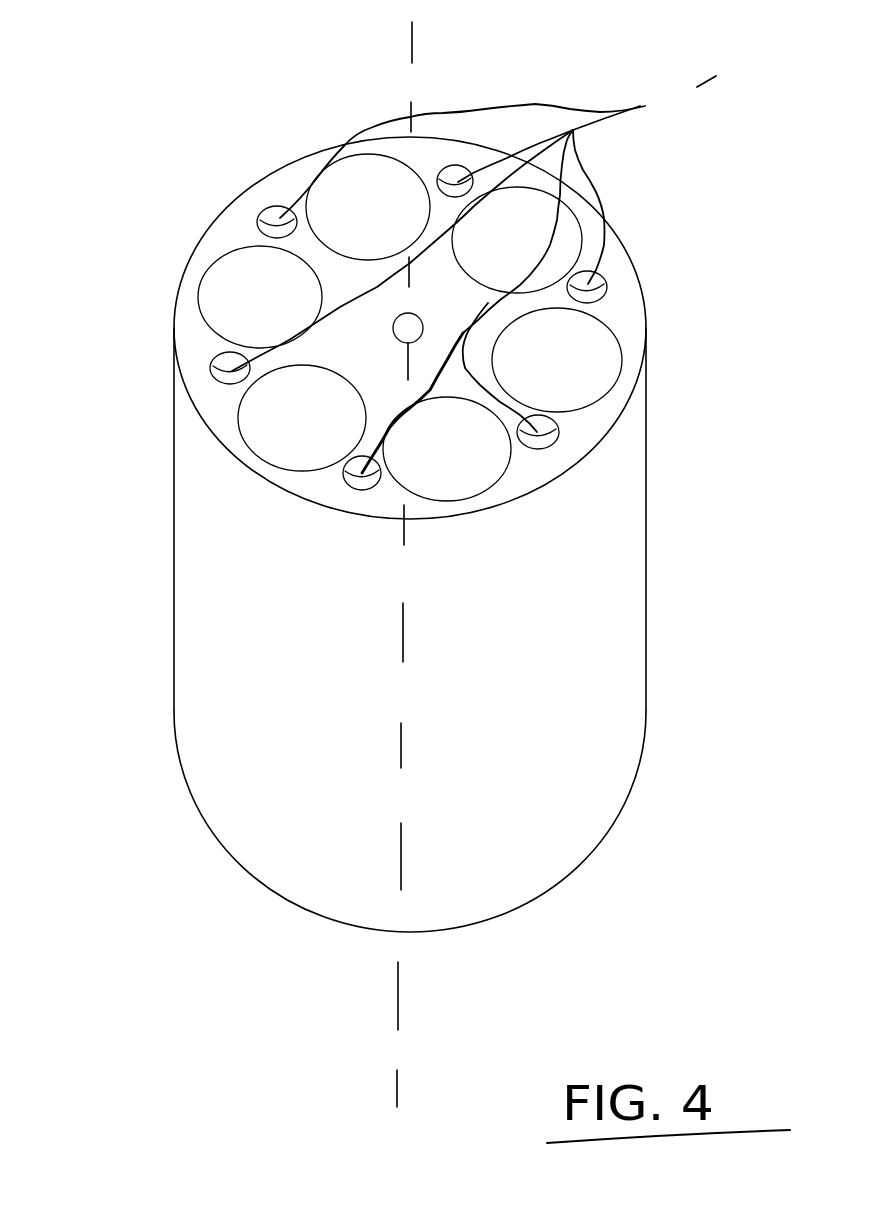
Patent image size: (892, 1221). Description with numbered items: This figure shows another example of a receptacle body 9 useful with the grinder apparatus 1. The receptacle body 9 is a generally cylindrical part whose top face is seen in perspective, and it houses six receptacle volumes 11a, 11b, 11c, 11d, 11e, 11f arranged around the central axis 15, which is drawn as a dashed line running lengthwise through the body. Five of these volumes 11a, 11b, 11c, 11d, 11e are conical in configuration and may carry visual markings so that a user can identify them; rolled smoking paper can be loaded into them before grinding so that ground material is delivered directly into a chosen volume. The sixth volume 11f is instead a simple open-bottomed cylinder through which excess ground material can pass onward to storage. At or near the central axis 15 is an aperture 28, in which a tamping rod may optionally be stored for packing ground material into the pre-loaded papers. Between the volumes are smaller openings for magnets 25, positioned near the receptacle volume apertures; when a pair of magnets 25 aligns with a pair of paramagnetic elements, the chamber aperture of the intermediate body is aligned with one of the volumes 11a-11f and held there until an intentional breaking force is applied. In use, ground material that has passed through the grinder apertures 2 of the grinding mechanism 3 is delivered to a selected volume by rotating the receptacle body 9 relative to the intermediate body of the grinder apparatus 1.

The receptacle body 9 is at (708, 730).
The central axis 15 is at (412, 40).
The magnets 25 is at (474, 274).
The aperture 28 is at (397, 330).
The receptacle volume 11a is at (330, 440).
The receptacle volume 11b is at (475, 463).
The receptacle volume 11c is at (582, 370).
The receptacle volume 11d is at (535, 250).
The receptacle volume 11e is at (388, 217).
The receptacle volume 11f is at (277, 313).
The grinder apparatus 1 is at (244, 508).
The grinder apertures 2 is at (464, 557).
The grinding mechanism 3 is at (634, 436).